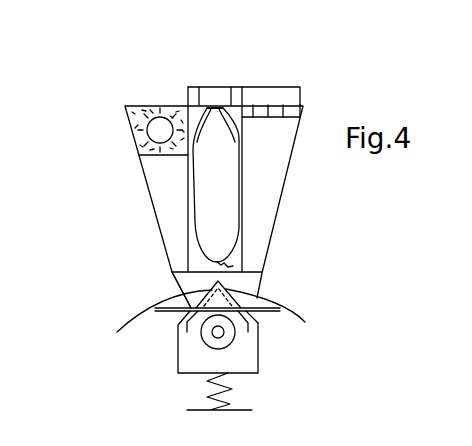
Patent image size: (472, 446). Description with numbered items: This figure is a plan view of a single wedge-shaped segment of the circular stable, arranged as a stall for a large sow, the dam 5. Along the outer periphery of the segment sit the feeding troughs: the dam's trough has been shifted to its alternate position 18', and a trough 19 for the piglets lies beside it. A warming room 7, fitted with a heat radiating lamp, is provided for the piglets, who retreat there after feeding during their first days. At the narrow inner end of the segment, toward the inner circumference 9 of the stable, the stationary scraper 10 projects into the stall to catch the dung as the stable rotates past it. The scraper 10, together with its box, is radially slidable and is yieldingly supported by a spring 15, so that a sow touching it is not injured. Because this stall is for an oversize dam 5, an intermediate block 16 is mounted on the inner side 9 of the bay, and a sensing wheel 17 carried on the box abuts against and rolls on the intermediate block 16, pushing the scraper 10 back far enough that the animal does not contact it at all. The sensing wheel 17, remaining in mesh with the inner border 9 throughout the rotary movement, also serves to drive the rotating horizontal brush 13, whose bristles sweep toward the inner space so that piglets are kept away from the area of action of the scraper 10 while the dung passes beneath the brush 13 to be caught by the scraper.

The dam 5 is at (205, 194).
The warming room 7 is at (150, 143).
The inner circumference 9 is at (143, 312).
The scraper 10 is at (192, 297).
The rotating horizontal brush 13 is at (223, 287).
The spring 15 is at (227, 402).
The intermediate block 16 is at (248, 330).
The sensing wheel 17 is at (207, 334).
The trough position 18' is at (244, 63).
The trough for the piglets 19 is at (272, 95).